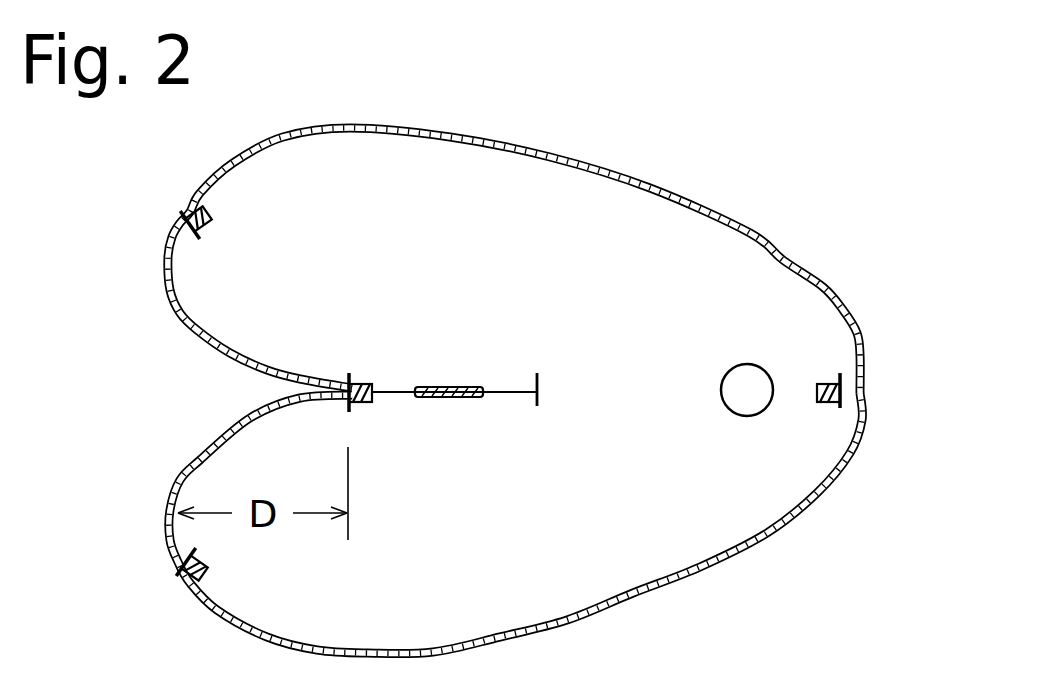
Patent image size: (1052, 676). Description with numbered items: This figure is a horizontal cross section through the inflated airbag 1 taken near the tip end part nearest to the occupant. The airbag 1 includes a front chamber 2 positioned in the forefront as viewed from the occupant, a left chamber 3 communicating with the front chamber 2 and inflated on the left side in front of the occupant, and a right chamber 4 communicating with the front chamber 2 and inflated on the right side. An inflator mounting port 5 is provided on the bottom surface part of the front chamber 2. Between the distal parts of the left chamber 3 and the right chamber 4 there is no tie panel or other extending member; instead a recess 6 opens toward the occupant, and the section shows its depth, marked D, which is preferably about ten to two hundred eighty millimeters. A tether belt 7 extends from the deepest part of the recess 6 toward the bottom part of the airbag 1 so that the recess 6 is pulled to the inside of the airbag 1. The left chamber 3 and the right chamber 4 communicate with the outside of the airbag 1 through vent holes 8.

The airbag 1 is at (491, 350).
The front chamber 2 is at (531, 357).
The left chamber 3 is at (361, 263).
The right chamber 4 is at (374, 563).
The inflator mounting port 5 is at (740, 404).
The recess 6 is at (215, 390).
The tether belt 7 is at (455, 397).
The vent holes 8 is at (577, 159).